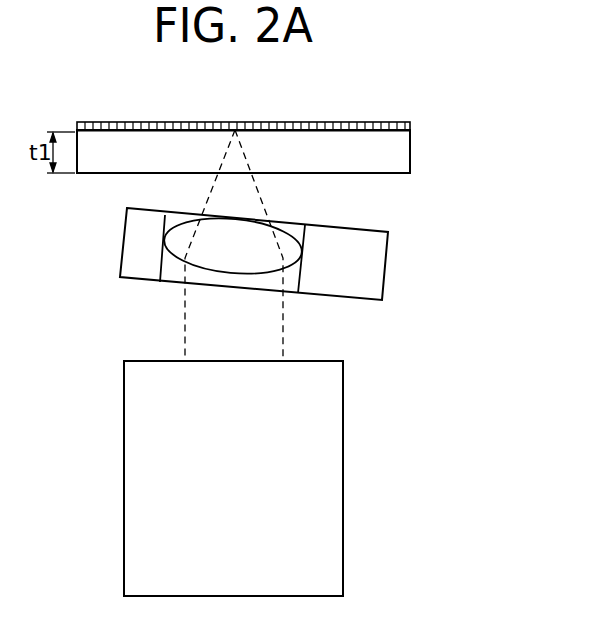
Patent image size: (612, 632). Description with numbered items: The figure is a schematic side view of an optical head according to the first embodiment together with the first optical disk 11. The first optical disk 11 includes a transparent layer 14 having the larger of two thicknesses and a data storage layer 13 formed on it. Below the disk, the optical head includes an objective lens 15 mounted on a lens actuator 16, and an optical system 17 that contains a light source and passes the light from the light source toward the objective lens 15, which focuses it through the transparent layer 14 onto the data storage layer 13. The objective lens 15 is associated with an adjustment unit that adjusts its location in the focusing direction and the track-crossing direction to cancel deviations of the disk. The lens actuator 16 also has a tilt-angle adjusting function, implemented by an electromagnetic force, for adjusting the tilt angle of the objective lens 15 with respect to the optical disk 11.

The first optical disk 11 is at (152, 143).
The data storage layer 13 is at (410, 125).
The transparent layer 14 is at (402, 152).
The objective lens 15 is at (293, 250).
The lens actuator 16 is at (372, 288).
The optical system 17 is at (330, 423).